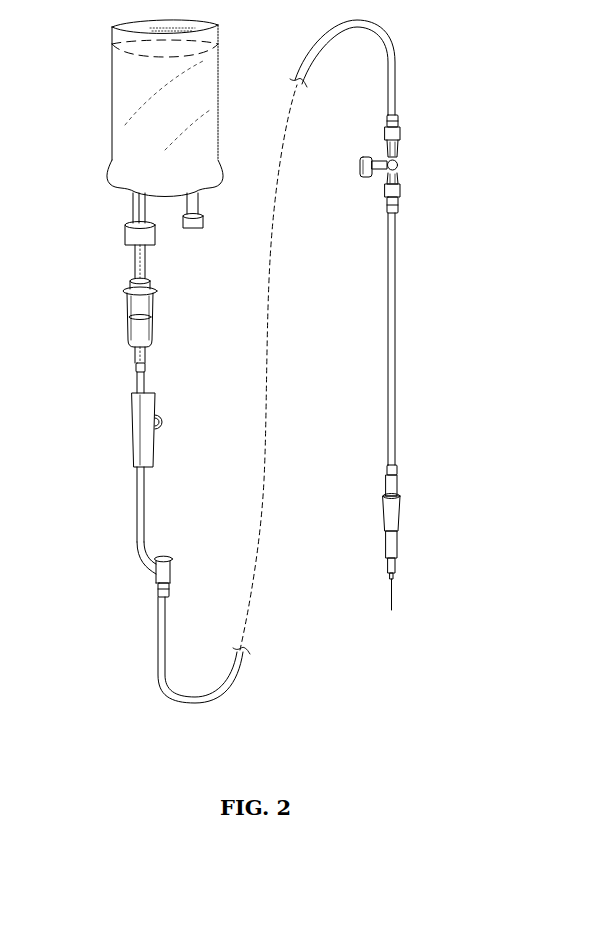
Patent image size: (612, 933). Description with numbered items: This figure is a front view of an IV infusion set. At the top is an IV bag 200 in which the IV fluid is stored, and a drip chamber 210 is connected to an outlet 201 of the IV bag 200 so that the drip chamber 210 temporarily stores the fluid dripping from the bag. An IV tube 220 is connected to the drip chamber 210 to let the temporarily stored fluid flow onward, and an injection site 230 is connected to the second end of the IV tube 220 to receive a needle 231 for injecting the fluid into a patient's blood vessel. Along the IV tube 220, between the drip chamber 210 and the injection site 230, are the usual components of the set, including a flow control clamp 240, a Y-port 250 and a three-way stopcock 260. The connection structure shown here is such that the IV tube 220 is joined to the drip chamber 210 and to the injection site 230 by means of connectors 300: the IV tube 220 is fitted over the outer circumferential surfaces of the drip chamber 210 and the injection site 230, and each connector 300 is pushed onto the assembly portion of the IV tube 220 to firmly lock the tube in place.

The IV bag 200 is at (111, 95).
The outlet 201 is at (125, 237).
The drip chamber 210 is at (128, 322).
The IV tube 220 is at (158, 640).
The injection site 230 is at (400, 515).
The needle 231 is at (392, 598).
The flow control clamp 240 is at (133, 437).
The Y-port 250 is at (172, 570).
The three-way stopcock 260 is at (400, 165).
The connector 300 is at (135, 368).